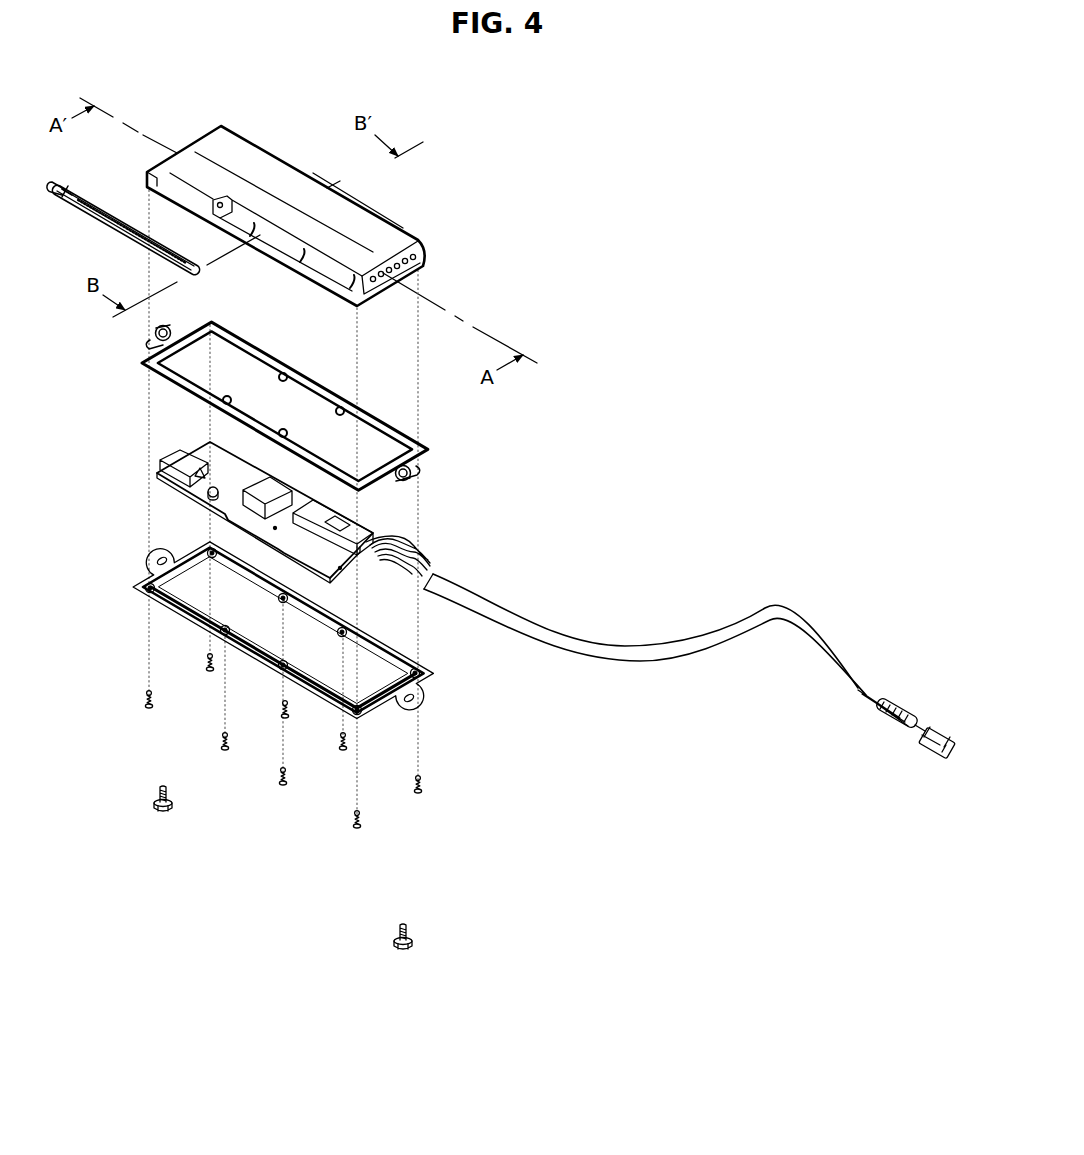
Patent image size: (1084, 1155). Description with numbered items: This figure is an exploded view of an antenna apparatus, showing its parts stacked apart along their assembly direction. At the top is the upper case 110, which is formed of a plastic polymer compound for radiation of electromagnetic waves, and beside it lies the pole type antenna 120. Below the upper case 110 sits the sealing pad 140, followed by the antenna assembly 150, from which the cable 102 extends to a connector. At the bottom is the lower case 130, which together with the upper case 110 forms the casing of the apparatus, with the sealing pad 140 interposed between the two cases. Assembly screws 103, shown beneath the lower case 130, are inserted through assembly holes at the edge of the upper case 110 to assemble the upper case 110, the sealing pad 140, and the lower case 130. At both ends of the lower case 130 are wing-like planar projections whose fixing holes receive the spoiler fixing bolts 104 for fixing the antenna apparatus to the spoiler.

The cable 102 is at (617, 644).
The assembly screw 103 is at (357, 823).
The spoiler fixing bolt 104 is at (163, 816).
The upper case 110 is at (395, 233).
The pole type antenna 120 is at (84, 212).
The lower case 130 is at (143, 587).
The sealing pad 140 is at (142, 365).
The antenna assembly 150 is at (157, 473).